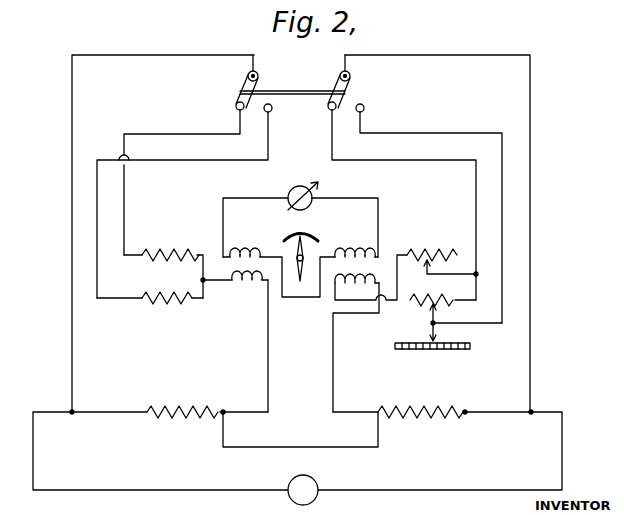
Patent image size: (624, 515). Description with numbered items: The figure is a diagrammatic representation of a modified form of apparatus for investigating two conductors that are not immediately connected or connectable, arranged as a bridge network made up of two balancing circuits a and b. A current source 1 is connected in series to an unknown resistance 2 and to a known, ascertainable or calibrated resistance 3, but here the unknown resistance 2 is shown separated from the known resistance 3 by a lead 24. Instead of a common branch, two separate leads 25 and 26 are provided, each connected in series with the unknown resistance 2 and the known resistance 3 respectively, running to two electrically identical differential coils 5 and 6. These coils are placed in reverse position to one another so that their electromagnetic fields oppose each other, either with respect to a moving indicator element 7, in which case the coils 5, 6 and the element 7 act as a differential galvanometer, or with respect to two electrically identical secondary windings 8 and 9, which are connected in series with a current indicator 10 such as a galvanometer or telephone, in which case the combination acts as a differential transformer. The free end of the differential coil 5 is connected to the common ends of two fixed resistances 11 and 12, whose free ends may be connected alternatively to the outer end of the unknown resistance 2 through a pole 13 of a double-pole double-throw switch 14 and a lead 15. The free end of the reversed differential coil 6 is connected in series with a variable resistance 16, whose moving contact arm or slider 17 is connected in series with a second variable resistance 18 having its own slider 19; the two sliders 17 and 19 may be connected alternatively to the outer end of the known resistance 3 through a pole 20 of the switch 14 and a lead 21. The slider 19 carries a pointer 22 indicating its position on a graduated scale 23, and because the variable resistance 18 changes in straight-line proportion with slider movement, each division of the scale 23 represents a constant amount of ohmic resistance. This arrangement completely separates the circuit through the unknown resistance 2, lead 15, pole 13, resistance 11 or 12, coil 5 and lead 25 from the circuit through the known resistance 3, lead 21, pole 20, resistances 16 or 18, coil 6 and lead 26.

The current source 1 is at (286, 503).
The unknown resistance 2 is at (200, 418).
The known, ascertainable or calibrated resistance 3 is at (455, 418).
The differential coil 5 is at (250, 290).
The reversed differential coil 6 is at (345, 290).
The moving indicator element 7 is at (308, 246).
The secondary winding 8 is at (252, 257).
The secondary winding 9 is at (353, 256).
The current indicator 10 is at (297, 186).
The fixed resistance 11 is at (170, 251).
The fixed resistance 12 is at (190, 302).
The pole of double-pole double-throw switch 13 is at (240, 98).
The double-pole double-throw switch 14 is at (295, 88).
The lead 15 is at (72, 218).
The variable resistance 16 is at (440, 253).
The moving contact arm or slider 17 is at (424, 275).
The variable resistance 18 is at (431, 294).
The moving contact arm or slider 19 is at (430, 321).
The pole of double-pole double-throw switch 20 is at (342, 100).
The lead 21 is at (530, 222).
The pointer 22 is at (430, 334).
The graduated scale 23 is at (434, 351).
The lead 24 is at (316, 447).
The lead 25 is at (267, 348).
The lead 26 is at (335, 348).
The balancing circuit a is at (74, 88).
The balancing circuit b is at (530, 75).